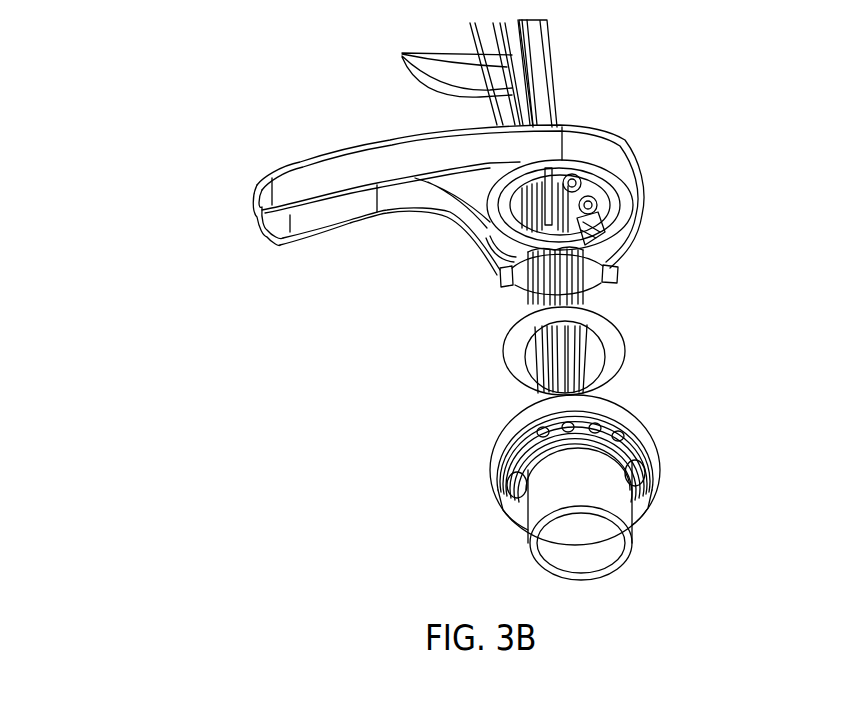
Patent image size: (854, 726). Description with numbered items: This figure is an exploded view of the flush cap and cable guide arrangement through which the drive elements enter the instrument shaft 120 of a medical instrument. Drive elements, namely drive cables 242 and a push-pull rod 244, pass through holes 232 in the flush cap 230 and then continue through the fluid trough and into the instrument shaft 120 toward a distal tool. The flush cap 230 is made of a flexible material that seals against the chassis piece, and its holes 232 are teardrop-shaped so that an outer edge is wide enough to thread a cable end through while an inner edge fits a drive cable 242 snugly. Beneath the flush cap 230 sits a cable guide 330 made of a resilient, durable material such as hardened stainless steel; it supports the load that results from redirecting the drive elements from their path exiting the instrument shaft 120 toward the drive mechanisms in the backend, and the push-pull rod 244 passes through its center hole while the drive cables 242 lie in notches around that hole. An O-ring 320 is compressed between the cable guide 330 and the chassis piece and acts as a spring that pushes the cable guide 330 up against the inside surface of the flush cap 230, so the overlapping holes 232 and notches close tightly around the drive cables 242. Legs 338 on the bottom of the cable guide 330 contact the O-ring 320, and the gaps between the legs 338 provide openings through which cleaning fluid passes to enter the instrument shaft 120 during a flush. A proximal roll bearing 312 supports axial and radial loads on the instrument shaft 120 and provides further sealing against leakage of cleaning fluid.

The instrument shaft 120 is at (633, 546).
The flush cap 230 is at (628, 184).
The holes 232 is at (497, 260).
The drive cables 242 is at (403, 53).
The push-pull rod 244 is at (547, 95).
The proximal roll bearing 312 is at (632, 415).
The O-ring 320 is at (620, 343).
The cable guide 330 is at (520, 292).
The legs 338 is at (614, 270).